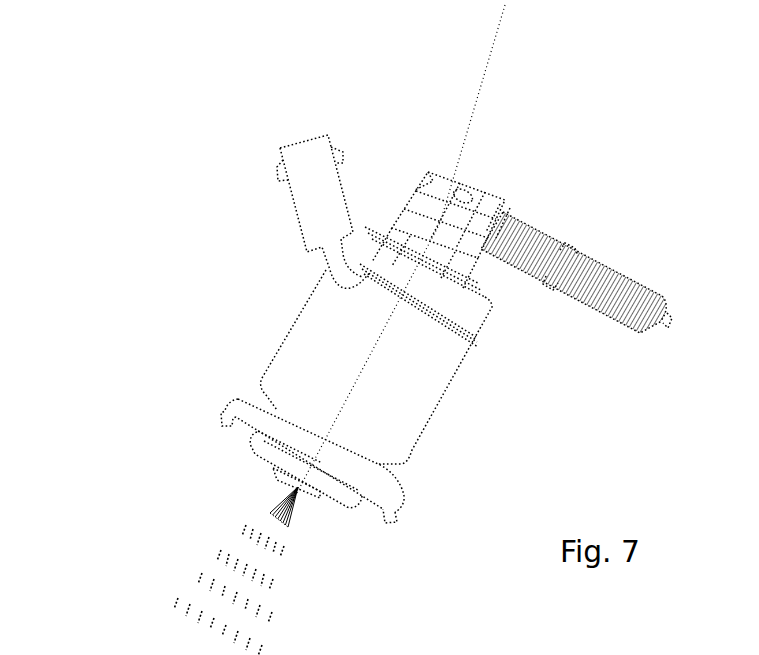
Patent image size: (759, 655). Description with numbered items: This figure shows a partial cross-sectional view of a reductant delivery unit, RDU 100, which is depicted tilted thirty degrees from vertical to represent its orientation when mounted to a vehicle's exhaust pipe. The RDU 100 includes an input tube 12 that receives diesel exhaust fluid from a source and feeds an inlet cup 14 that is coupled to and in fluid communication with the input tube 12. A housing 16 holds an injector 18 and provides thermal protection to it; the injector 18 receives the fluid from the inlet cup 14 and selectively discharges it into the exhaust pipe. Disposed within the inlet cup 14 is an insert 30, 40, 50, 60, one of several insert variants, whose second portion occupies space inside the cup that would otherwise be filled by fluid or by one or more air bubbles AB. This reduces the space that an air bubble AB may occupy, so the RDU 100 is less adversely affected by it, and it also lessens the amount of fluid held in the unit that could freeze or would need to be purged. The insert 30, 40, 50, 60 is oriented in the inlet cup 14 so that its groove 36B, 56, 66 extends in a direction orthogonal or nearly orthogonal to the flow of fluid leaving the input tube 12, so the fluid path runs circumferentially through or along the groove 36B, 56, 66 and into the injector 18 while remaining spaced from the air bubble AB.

The RDU 100 is at (105, 53).
The input tube 12 is at (632, 284).
The inlet cup 14 is at (437, 173).
The housing 16 is at (296, 341).
The injector 18 is at (465, 257).
The insert 30 is at (537, 139).
The insert 40 is at (537, 139).
The insert 50 is at (537, 139).
The insert 60 is at (458, 190).
The groove 36B is at (567, 133).
The groove 56 is at (567, 133).
The groove 66 is at (478, 193).
The air bubble AB is at (432, 173).